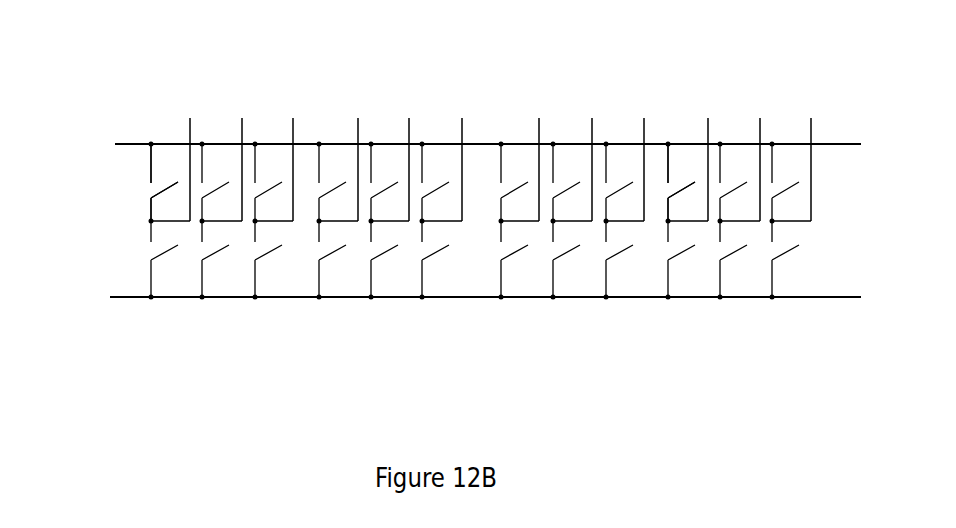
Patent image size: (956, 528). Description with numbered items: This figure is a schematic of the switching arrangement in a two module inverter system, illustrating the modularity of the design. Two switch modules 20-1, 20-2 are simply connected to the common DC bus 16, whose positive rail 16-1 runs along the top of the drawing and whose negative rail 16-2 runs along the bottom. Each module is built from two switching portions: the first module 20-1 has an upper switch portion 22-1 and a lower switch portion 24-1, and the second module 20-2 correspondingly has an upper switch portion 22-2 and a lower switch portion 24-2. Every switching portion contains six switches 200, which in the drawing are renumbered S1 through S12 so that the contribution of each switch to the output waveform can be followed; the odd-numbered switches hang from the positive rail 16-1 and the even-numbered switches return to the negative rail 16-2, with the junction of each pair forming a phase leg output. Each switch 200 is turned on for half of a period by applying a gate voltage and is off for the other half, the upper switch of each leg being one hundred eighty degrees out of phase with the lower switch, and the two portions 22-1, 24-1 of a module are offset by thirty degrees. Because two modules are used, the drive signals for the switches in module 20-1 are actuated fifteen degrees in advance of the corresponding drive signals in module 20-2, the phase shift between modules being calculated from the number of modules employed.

The DC bus 16 is at (456, 223).
The DC+ bus line 16-1 is at (116, 144).
The DC- bus line 16-2 is at (118, 304).
The switch module 20-1 is at (218, 50).
The switch module 20-2 is at (575, 57).
The upper switch portion 22-1 is at (306, 243).
The upper 6-switches of second module 22-2 is at (655, 243).
The lower switch portion 24-1 is at (289, 282).
The lower 6-switches of second module 24-2 is at (649, 282).
The switches 200 is at (176, 216).